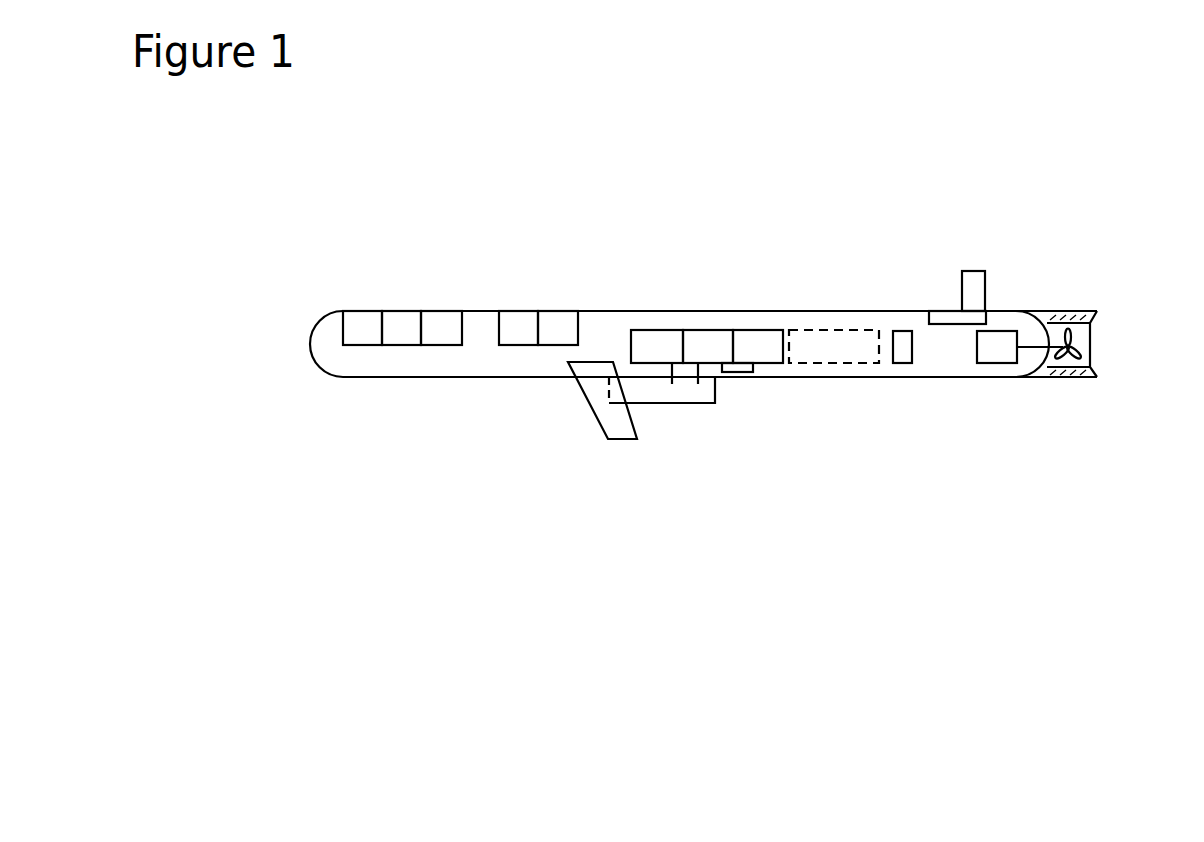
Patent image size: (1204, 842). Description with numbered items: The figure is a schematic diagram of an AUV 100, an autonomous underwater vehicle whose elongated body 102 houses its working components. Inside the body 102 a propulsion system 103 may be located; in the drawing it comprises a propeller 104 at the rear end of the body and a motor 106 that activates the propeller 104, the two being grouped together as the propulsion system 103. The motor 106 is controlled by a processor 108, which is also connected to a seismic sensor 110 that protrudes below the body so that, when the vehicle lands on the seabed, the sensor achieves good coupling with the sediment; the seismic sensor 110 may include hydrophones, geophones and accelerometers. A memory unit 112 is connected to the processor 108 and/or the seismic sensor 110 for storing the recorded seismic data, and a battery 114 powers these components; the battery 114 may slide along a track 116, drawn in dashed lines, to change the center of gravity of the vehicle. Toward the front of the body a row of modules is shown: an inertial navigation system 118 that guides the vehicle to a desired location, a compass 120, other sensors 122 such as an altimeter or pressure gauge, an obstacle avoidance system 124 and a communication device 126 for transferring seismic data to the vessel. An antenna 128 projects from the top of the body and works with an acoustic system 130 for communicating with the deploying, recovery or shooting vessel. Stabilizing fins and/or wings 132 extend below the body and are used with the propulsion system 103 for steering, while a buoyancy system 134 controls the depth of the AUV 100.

The AUV 100 is at (753, 173).
The body 102 is at (481, 347).
The propulsion system 103 is at (1086, 404).
The propeller 104 is at (1075, 335).
The motor 106 is at (993, 353).
The processor 108 is at (709, 342).
The seismic sensor 110 is at (660, 403).
The memory unit 112 is at (657, 342).
The battery 114 is at (760, 342).
The track 116 is at (843, 342).
The inertial navigation system 118 is at (563, 338).
The compass 120 is at (513, 337).
The other sensors 122 is at (442, 340).
The obstacle avoidance system 124 is at (402, 323).
The communication device 126 is at (360, 322).
The antenna 128 is at (978, 288).
The acoustic system 130 is at (948, 320).
The stabilizing fins and/or wings 132 is at (605, 437).
The buoyancy system 134 is at (902, 352).